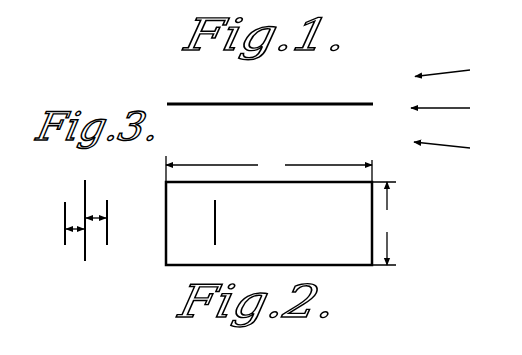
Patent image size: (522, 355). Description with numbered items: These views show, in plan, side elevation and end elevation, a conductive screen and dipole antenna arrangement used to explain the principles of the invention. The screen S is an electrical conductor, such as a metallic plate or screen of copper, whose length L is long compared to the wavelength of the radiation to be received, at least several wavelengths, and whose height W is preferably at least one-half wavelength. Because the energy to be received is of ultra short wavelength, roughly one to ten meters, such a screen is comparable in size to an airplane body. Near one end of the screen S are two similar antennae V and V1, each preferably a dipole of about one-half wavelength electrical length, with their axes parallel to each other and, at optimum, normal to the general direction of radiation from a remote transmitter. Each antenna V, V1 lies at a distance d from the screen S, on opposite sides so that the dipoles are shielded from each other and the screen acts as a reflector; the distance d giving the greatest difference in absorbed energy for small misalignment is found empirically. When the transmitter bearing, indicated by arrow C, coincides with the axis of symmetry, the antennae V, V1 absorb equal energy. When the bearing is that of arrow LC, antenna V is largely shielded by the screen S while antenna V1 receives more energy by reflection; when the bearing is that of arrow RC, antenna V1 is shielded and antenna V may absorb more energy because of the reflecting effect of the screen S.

In FIG. 1, the screen S is at (335, 105).
In FIG. 2, the screen S is at (167, 238).
In FIG. 3, the screen S is at (86, 258).
In FIG. 1, the antenna V is at (219, 128).
In FIG. 3, the antenna V is at (108, 220).
In FIG. 1, the antenna V1 is at (215, 84).
In FIG. 2, the antenna V1 is at (216, 234).
In FIG. 3, the antenna V1 is at (64, 230).
In FIG. 2, the length L is at (269, 169).
In FIG. 2, the height W is at (384, 223).
In FIG. 3, the distance d is at (86, 226).
In FIG. 1, the arrow LC is at (442, 66).
In FIG. 1, the arrow C is at (440, 100).
In FIG. 1, the arrow RC is at (442, 139).